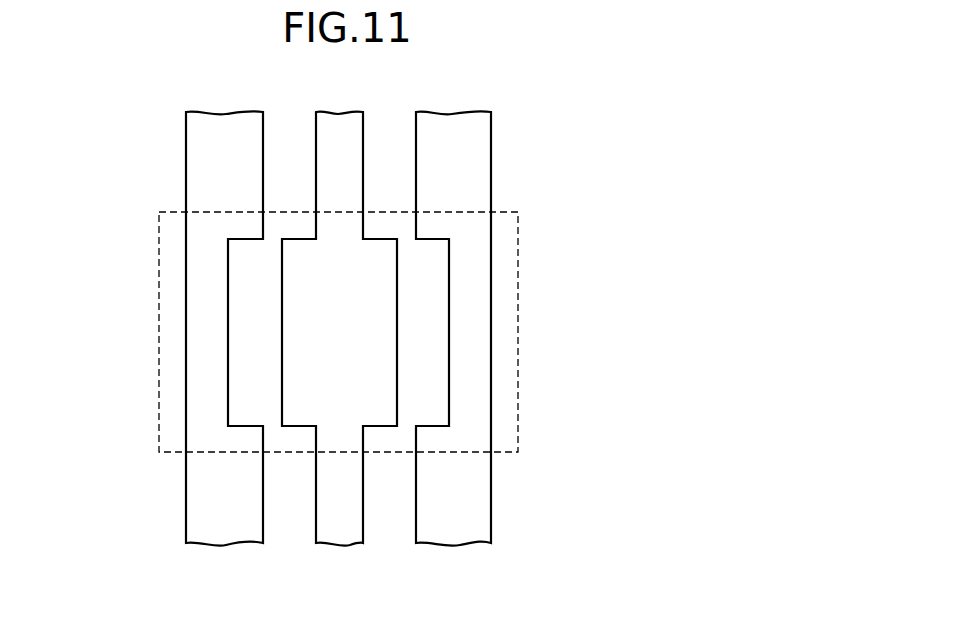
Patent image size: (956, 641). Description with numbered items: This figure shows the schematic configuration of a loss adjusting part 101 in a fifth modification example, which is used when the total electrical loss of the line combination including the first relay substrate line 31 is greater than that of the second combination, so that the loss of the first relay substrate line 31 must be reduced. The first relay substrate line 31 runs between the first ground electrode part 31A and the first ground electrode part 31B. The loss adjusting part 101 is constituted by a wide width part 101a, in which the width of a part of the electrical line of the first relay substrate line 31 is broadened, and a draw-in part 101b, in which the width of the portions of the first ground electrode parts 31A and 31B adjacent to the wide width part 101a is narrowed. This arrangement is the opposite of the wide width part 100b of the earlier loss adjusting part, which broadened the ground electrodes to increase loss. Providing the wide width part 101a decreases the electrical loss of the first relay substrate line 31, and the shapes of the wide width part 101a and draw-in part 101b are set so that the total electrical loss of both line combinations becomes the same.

The first ground electrode part 31B is at (213, 528).
The first relay substrate line 31 is at (338, 528).
The first ground electrode part 31A is at (465, 528).
The loss adjusting part 101 is at (518, 228).
The draw-in part 101b is at (477, 327).
The wide width part 101a is at (343, 390).
The wide width part 100b is at (212, 362).